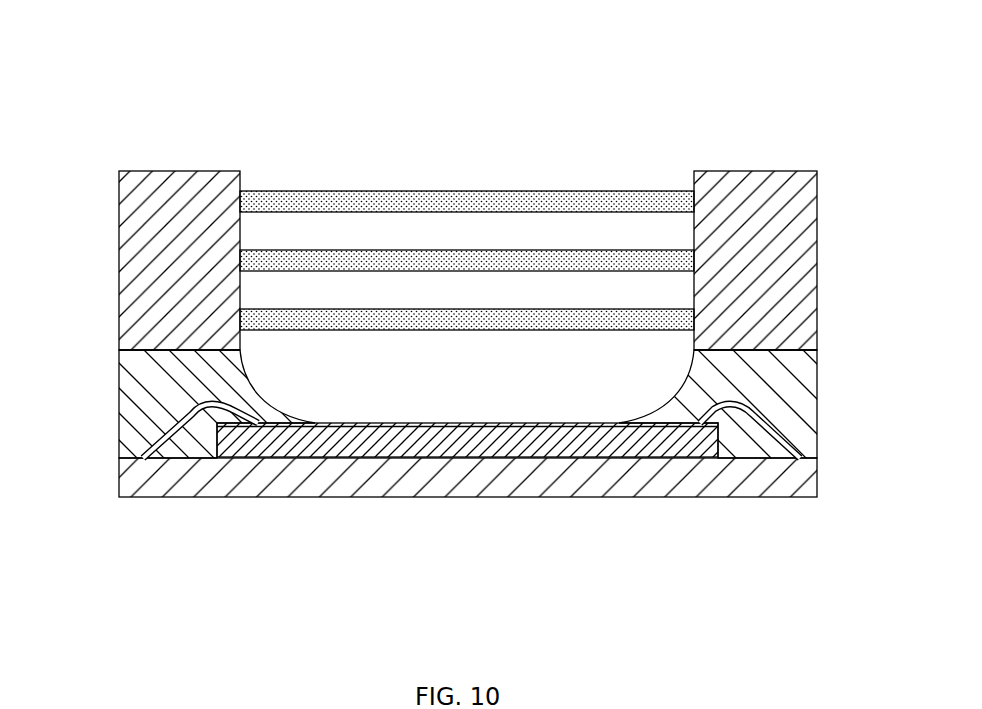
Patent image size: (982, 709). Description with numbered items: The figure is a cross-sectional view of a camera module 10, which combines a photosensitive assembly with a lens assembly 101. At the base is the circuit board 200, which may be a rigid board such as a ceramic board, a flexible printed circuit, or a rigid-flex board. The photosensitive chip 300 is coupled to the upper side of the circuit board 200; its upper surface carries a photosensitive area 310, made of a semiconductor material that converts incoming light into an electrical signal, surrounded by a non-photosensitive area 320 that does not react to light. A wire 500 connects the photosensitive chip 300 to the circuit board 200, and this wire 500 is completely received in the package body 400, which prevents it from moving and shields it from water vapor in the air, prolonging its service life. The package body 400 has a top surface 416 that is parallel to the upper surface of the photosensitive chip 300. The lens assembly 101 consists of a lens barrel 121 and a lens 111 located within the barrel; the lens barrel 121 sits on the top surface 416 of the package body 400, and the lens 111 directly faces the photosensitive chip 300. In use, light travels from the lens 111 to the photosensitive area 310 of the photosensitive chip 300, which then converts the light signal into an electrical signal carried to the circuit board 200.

The camera module 10 is at (106, 40).
The lens assembly 101 is at (468, 187).
The lens 111 is at (312, 191).
The lens barrel 121 is at (174, 172).
The circuit board 200 is at (119, 478).
The photosensitive chip 300 is at (467, 509).
The photosensitive area 310 is at (347, 425).
The non-photosensitive area 320 is at (283, 440).
The package body 400 is at (119, 387).
The top surface 416 is at (119, 350).
The wire 500 is at (780, 437).